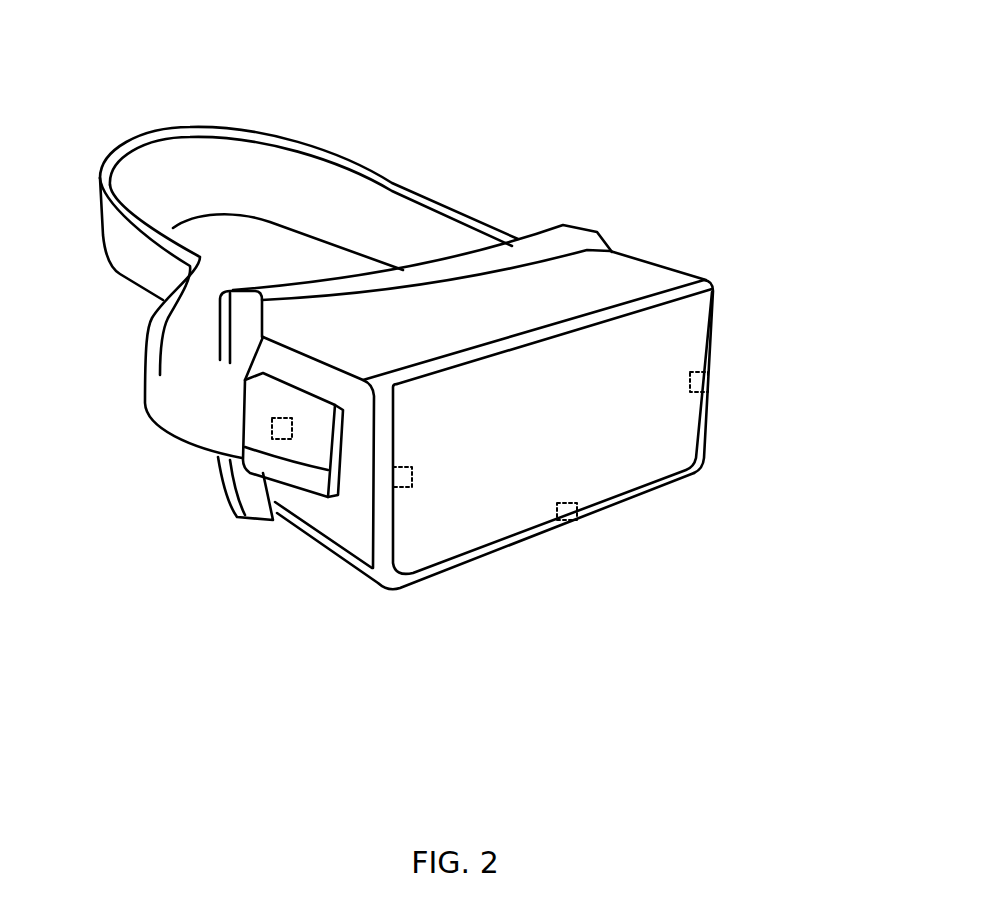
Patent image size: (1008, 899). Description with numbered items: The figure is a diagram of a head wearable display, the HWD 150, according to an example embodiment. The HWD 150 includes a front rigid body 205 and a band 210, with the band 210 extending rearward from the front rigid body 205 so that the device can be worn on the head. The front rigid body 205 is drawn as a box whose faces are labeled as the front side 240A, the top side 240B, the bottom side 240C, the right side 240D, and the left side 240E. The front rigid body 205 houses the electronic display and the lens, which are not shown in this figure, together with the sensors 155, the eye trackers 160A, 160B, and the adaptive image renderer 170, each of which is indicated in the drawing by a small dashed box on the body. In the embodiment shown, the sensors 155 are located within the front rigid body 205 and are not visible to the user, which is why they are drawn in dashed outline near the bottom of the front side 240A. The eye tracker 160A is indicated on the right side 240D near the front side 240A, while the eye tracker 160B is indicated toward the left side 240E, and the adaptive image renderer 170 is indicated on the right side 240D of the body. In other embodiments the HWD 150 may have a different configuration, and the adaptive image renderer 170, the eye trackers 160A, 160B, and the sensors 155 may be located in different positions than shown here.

The HWD 150 is at (27, 70).
The band 210 is at (414, 190).
The front rigid body 205 is at (712, 282).
The front side 240A is at (632, 457).
The top side 240B is at (346, 327).
The bottom side 240C is at (306, 554).
The right side 240D is at (347, 517).
The left side 240E is at (684, 266).
The adaptive image renderer 170 is at (270, 430).
The eye tracker 160A is at (404, 489).
The eye tracker 160B is at (713, 385).
The sensors 155 is at (572, 520).